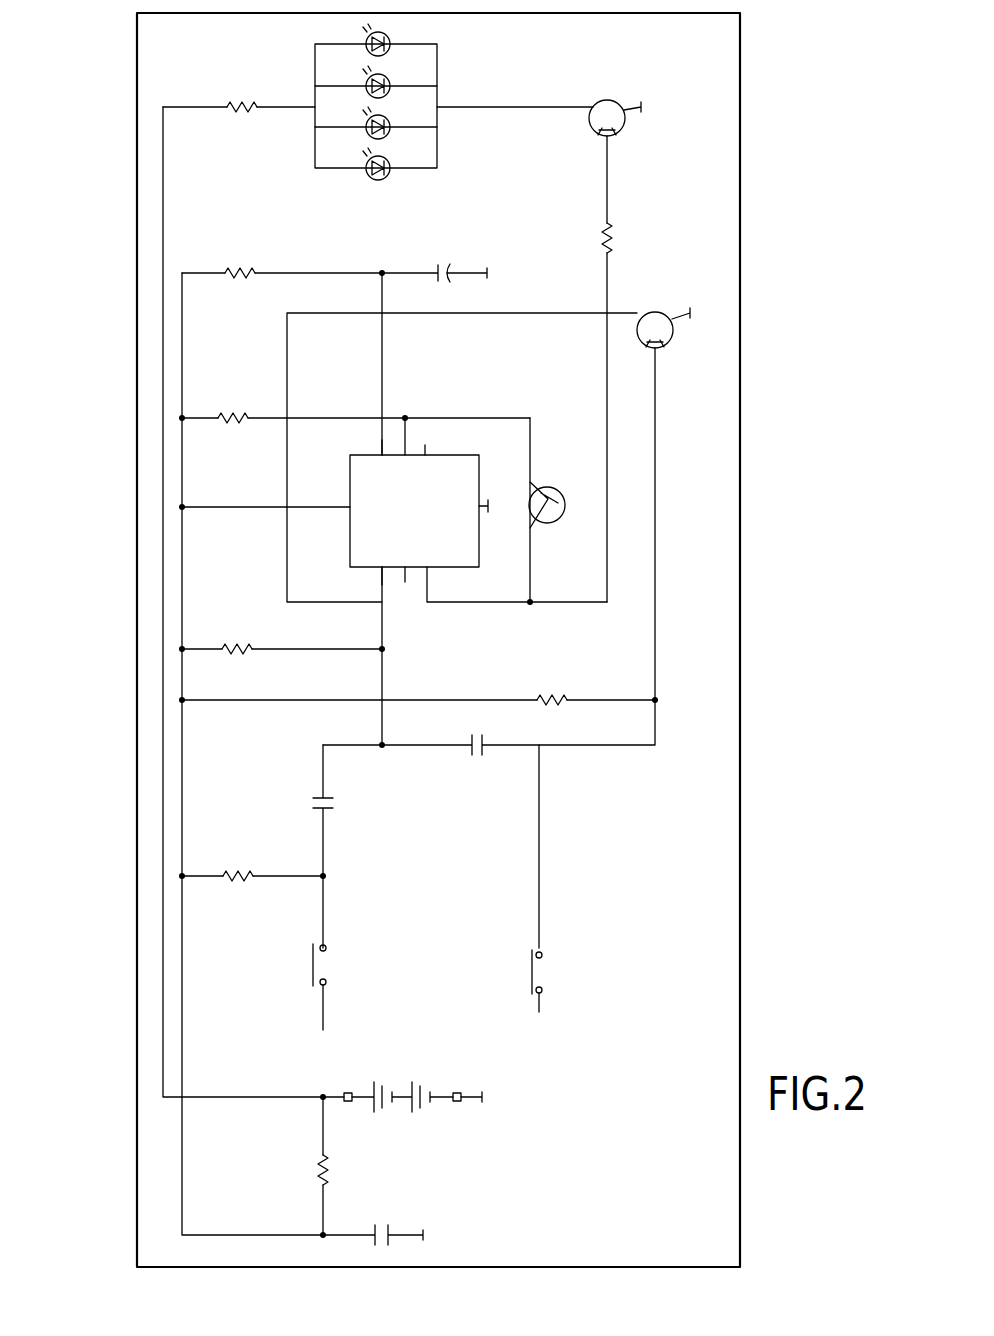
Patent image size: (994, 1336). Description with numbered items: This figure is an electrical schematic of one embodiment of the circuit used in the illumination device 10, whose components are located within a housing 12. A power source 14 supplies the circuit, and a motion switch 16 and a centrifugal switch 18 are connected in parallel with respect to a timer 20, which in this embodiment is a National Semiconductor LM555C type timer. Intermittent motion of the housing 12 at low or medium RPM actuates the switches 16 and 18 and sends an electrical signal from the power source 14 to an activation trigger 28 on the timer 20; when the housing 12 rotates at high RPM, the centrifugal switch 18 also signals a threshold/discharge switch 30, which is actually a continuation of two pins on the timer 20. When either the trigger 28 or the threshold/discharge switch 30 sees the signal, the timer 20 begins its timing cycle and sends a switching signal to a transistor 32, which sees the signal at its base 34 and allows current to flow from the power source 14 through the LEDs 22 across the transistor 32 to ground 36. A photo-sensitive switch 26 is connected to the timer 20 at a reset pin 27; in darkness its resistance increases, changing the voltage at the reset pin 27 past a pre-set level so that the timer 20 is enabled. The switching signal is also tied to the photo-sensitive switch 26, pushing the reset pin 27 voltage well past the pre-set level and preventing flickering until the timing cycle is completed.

The illumination device 10 is at (81, 395).
The housing 12 is at (136, 890).
The power source 14 is at (383, 1118).
The motion switch 16 is at (318, 963).
The centrifugal switch 18 is at (533, 975).
The timer 20 is at (482, 470).
The light emitting diode 22 is at (297, 69).
The photo-sensitive switch 26 is at (548, 524).
The reset pin 27 is at (427, 445).
The activation trigger 28 is at (380, 582).
The threshold/discharge switch 30 is at (380, 452).
The transistor 32 is at (666, 146).
The base 34 is at (595, 136).
The ground 36 is at (678, 114).